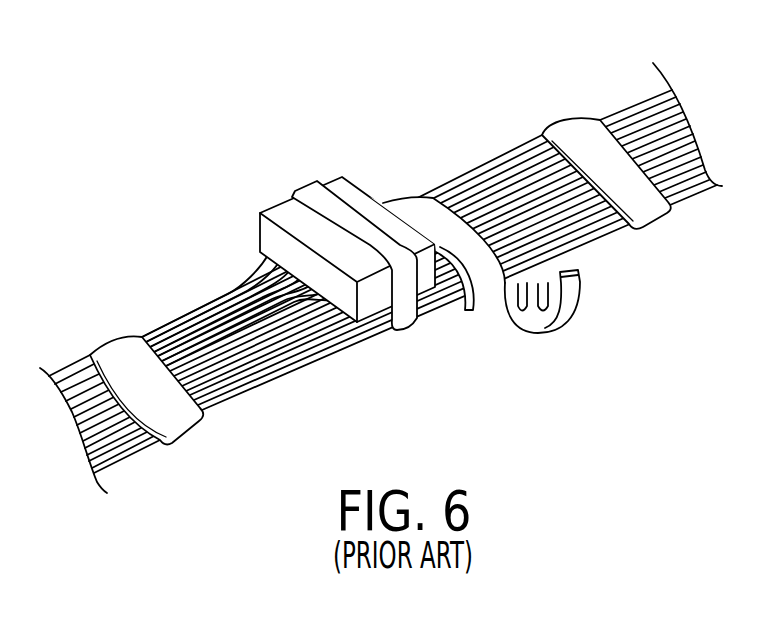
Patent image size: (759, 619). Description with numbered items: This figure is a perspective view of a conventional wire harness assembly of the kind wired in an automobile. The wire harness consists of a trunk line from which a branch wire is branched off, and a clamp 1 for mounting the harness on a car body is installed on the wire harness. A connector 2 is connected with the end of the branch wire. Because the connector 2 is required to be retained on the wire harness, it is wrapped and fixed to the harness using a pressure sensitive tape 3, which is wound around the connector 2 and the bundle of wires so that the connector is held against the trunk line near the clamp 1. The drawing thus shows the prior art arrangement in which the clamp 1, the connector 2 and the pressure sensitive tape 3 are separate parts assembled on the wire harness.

The clamp 1 is at (572, 334).
The connector 2 is at (370, 197).
The pressure sensitive tape 3 is at (302, 190).